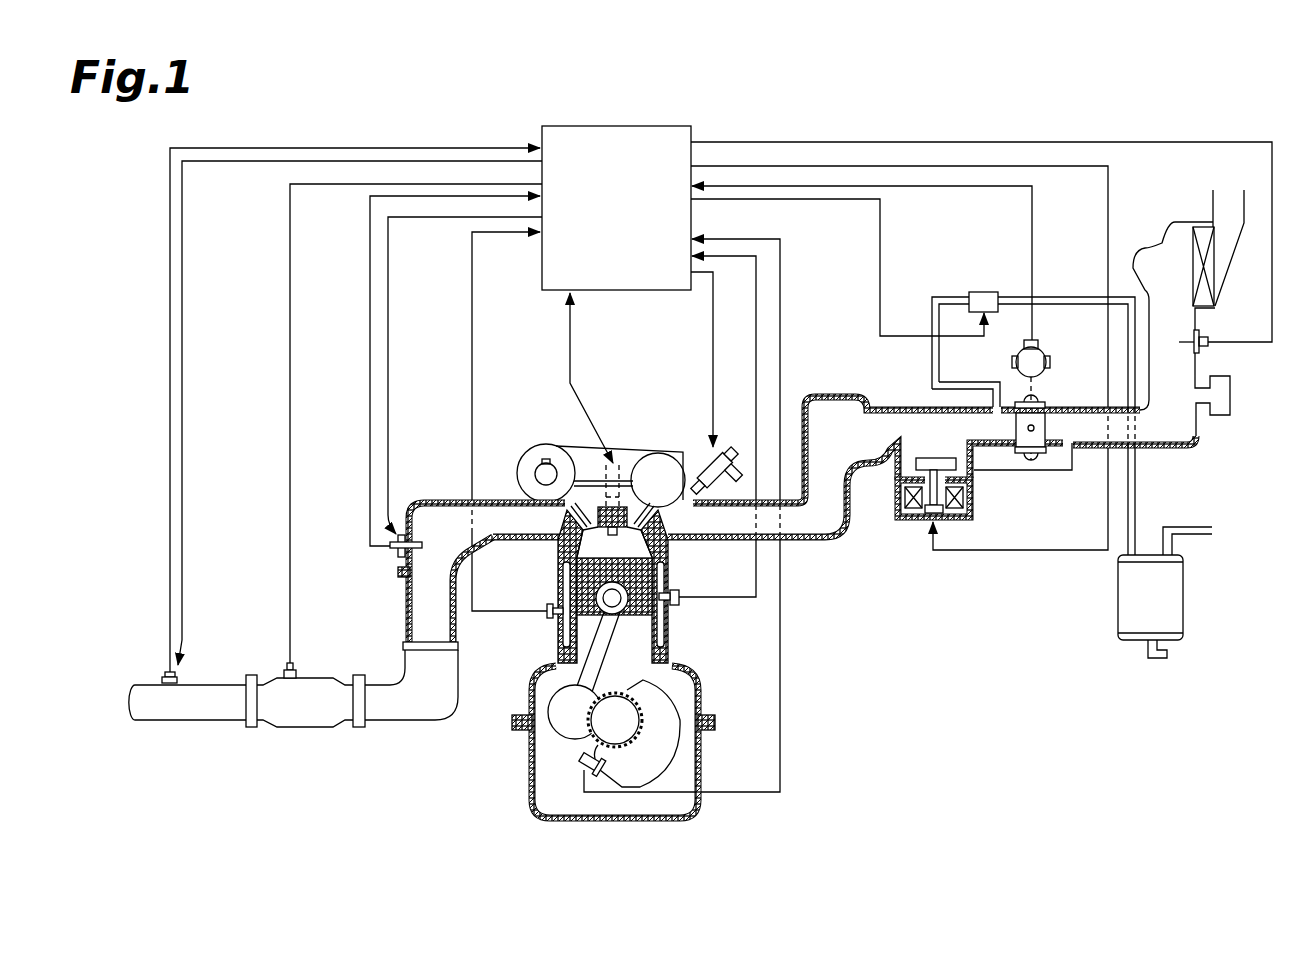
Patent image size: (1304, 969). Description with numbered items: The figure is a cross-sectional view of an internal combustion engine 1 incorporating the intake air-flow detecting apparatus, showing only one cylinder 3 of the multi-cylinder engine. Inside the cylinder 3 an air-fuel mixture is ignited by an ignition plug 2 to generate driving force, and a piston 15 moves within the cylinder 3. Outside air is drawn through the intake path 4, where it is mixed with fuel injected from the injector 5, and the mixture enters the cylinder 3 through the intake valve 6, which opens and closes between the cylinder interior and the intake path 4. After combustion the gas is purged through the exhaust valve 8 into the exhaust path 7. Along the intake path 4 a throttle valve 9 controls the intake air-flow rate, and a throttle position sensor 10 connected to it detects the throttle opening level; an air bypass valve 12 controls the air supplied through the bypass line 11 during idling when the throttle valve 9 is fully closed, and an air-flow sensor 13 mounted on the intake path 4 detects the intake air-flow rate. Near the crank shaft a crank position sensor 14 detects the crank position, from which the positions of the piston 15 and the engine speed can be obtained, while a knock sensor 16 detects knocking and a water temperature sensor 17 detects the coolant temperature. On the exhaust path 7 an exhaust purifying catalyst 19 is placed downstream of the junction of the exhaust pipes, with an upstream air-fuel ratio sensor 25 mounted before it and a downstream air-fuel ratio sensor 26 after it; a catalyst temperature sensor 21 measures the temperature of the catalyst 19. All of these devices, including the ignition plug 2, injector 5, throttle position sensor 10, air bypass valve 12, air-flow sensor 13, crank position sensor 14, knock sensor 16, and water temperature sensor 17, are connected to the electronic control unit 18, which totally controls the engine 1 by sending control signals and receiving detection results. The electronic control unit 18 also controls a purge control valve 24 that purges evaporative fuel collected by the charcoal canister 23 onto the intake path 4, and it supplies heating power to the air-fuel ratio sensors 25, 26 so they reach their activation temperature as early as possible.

The engine 1 is at (822, 665).
The ignition plug 2 is at (598, 458).
The cylinder 3 is at (560, 558).
The intake path 4 is at (820, 525).
The injector 5 is at (692, 458).
The intake valve 6 is at (668, 530).
The exhaust path 7 is at (404, 624).
The exhaust valve 8 is at (583, 530).
The throttle valve 9 is at (1030, 447).
The throttle position sensor 10 is at (1040, 357).
The bypass line 11 is at (1040, 445).
The air bypass valve 12 is at (912, 522).
The air-flow sensor 13 is at (1204, 350).
The crank position sensor 14 is at (580, 757).
The piston 15 is at (558, 648).
The knock sensor 16 is at (547, 612).
The water temperature sensor 17 is at (680, 603).
The electronic control unit 18 is at (606, 125).
The exhaust purifying catalyst 19 is at (312, 718).
The catalyst temperature sensor 21 is at (285, 667).
The charcoal canister 23 is at (1178, 600).
The purge control valve 24 is at (990, 296).
The upstream air-fuel ratio sensor 25 is at (396, 553).
The downstream air-fuel ratio sensor 26 is at (163, 680).